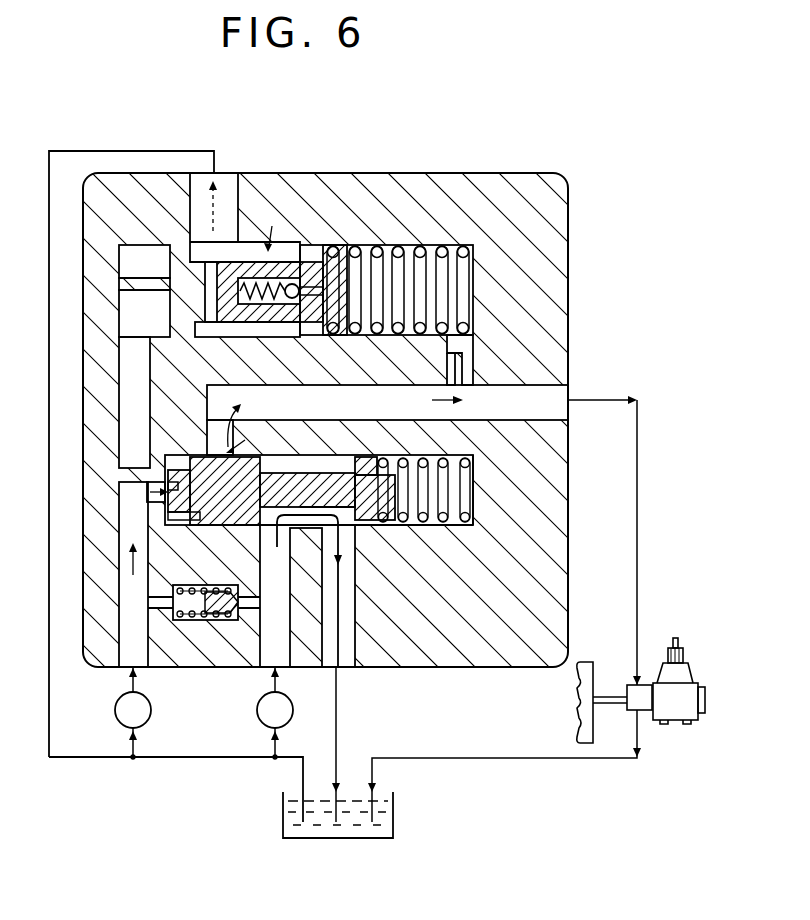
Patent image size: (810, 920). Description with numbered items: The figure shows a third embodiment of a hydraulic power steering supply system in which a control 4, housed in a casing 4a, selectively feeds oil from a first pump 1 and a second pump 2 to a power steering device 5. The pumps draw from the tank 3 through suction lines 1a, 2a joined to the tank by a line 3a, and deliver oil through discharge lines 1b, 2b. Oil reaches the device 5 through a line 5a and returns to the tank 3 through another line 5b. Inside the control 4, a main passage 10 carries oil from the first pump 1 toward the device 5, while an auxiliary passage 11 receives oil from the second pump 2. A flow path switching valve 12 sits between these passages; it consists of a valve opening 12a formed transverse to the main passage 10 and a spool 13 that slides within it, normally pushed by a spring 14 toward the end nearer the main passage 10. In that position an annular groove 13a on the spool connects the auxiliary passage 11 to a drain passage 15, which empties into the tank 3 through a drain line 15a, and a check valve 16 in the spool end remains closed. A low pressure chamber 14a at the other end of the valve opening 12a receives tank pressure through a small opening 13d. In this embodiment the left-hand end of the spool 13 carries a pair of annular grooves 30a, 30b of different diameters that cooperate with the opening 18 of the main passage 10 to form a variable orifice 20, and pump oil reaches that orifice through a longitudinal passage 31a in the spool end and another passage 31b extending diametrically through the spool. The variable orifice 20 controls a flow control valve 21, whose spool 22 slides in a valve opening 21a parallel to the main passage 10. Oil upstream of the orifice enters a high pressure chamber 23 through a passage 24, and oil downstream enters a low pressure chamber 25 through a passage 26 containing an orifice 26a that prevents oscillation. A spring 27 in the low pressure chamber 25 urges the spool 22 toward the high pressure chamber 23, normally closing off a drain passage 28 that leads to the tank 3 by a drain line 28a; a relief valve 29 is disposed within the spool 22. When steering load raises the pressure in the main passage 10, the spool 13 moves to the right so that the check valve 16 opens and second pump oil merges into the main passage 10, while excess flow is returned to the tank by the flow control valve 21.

The first pump 1 is at (151, 711).
The suction line 1a is at (133, 748).
The discharge line 1b is at (133, 680).
The second pump 2 is at (294, 712).
The suction line 2a is at (275, 748).
The discharge line 2b is at (276, 681).
The tank 3 is at (350, 838).
The line 3a is at (200, 758).
The control 4 is at (556, 168).
The casing 4a is at (557, 226).
The power steering device 5 is at (677, 720).
The line 5a is at (638, 570).
The line 5b is at (520, 758).
The main passage 10 is at (527, 405).
The auxiliary passage 11 is at (272, 640).
The flow path switching valve 12 is at (288, 452).
The valve opening 12a is at (436, 528).
The spool 13 is at (302, 477).
The annular groove 13a is at (318, 470).
The small opening 13d is at (372, 462).
The spring 14 is at (450, 479).
The low pressure chamber 14a is at (467, 508).
The drain passage 15 is at (345, 616).
The drain line 15a is at (336, 731).
The check valve 16 is at (221, 626).
The opening 18 is at (200, 447).
The variable orifice 20 is at (250, 437).
The flow control valve 21 is at (259, 269).
The valve opening 21a is at (423, 245).
The spool 22 is at (282, 268).
The high pressure chamber 23 is at (147, 257).
The passage 24 is at (130, 375).
The low pressure chamber 25 is at (456, 292).
The passage 26 is at (458, 378).
The orifice 26a is at (463, 362).
The spring 27 is at (440, 242).
The drain passage 28 is at (227, 200).
The drain line 28a is at (167, 150).
The relief valve 29 is at (299, 274).
The annular groove 30a is at (200, 462).
The annular groove 30b is at (188, 472).
The longitudinal passage 31a is at (160, 498).
The passage 31b is at (183, 520).